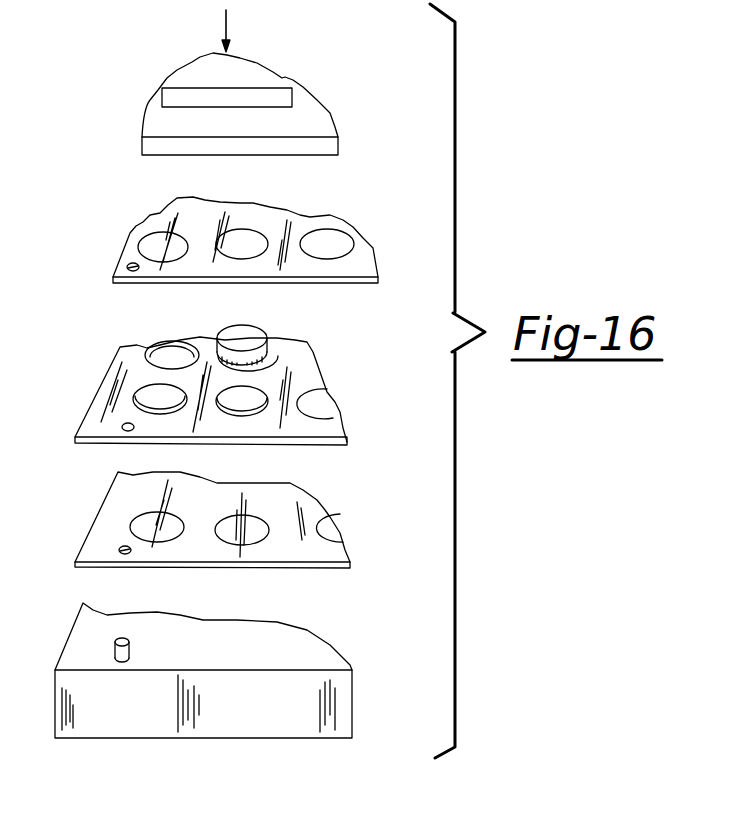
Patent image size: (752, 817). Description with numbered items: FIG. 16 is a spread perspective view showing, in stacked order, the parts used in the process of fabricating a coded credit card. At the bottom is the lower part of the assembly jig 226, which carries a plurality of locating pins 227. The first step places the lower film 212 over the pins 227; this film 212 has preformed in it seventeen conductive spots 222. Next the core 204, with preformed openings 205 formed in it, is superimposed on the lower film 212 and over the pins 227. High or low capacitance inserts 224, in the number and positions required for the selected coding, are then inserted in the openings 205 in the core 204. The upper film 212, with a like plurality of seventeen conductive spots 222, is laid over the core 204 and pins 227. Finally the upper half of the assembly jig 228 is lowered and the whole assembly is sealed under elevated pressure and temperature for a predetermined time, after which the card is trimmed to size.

The upper half of the assembly jig 228 is at (248, 68).
The film 212 is at (287, 220).
The conductive spots 222 is at (150, 243).
The capacitance inserts 224 is at (245, 332).
The openings 205 is at (256, 391).
The core 204 is at (330, 430).
The locating pins 227 is at (130, 650).
The assembly jig 226 is at (242, 732).